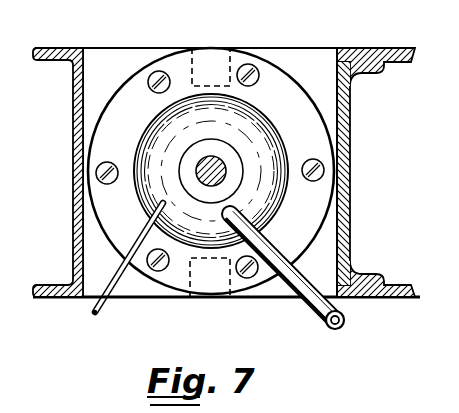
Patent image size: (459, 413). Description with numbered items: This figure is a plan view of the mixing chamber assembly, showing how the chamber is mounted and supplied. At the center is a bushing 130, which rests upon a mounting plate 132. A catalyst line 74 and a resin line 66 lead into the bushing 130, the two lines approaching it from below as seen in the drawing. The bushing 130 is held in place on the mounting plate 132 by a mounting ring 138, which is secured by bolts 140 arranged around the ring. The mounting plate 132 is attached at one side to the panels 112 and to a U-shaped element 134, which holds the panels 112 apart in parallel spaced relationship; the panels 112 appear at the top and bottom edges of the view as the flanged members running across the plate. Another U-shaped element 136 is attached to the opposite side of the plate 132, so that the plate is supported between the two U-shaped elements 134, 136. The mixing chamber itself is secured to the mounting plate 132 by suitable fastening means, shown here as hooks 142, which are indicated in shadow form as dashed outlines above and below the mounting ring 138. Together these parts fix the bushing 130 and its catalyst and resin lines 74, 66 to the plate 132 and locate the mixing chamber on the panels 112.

The resin line 66 is at (318, 311).
The catalyst line 74 is at (93, 310).
The panels 112 is at (354, 54).
The bushing 130 is at (264, 143).
The mounting plate 132 is at (105, 62).
The U-shaped element 134 is at (346, 216).
The U-shaped element 136 is at (73, 195).
The mounting ring 138 is at (178, 70).
The bolts 140 is at (249, 72).
The hooks 142 is at (204, 284).